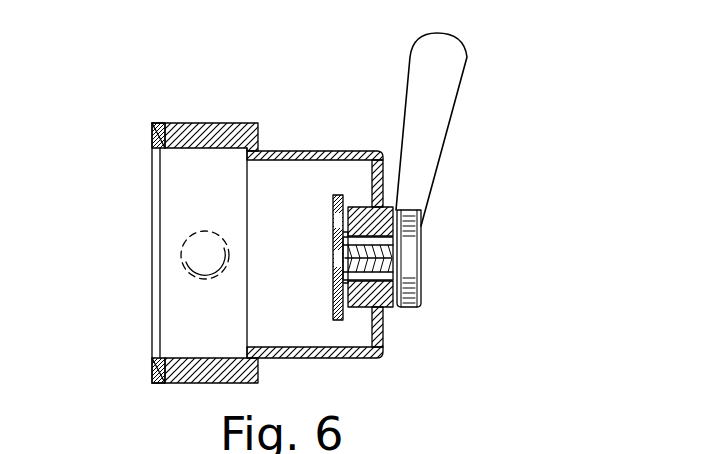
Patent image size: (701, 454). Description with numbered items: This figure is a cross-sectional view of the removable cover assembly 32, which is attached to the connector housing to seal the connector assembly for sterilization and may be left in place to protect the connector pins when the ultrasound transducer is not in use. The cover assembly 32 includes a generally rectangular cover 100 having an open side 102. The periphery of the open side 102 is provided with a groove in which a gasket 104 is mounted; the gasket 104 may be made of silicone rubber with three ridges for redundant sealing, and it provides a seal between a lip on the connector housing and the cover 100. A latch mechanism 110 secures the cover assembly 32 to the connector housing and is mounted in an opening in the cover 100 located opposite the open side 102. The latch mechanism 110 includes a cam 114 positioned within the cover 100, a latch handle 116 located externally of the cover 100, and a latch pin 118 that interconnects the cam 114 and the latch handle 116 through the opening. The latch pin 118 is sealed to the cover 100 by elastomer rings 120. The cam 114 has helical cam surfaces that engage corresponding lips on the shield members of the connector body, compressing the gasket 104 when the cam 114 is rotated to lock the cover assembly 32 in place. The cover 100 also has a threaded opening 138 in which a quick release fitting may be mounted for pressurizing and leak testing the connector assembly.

The cover assembly 32 is at (234, 106).
The cover 100 is at (306, 150).
The open side 102 is at (173, 331).
The gasket 104 is at (153, 127).
The threaded opening 138 is at (196, 259).
The cam 114 is at (333, 206).
The latch handle 116 is at (458, 108).
The latch mechanism 110 is at (429, 230).
The latch pin 118 is at (399, 268).
The elastomer rings 120 is at (357, 307).